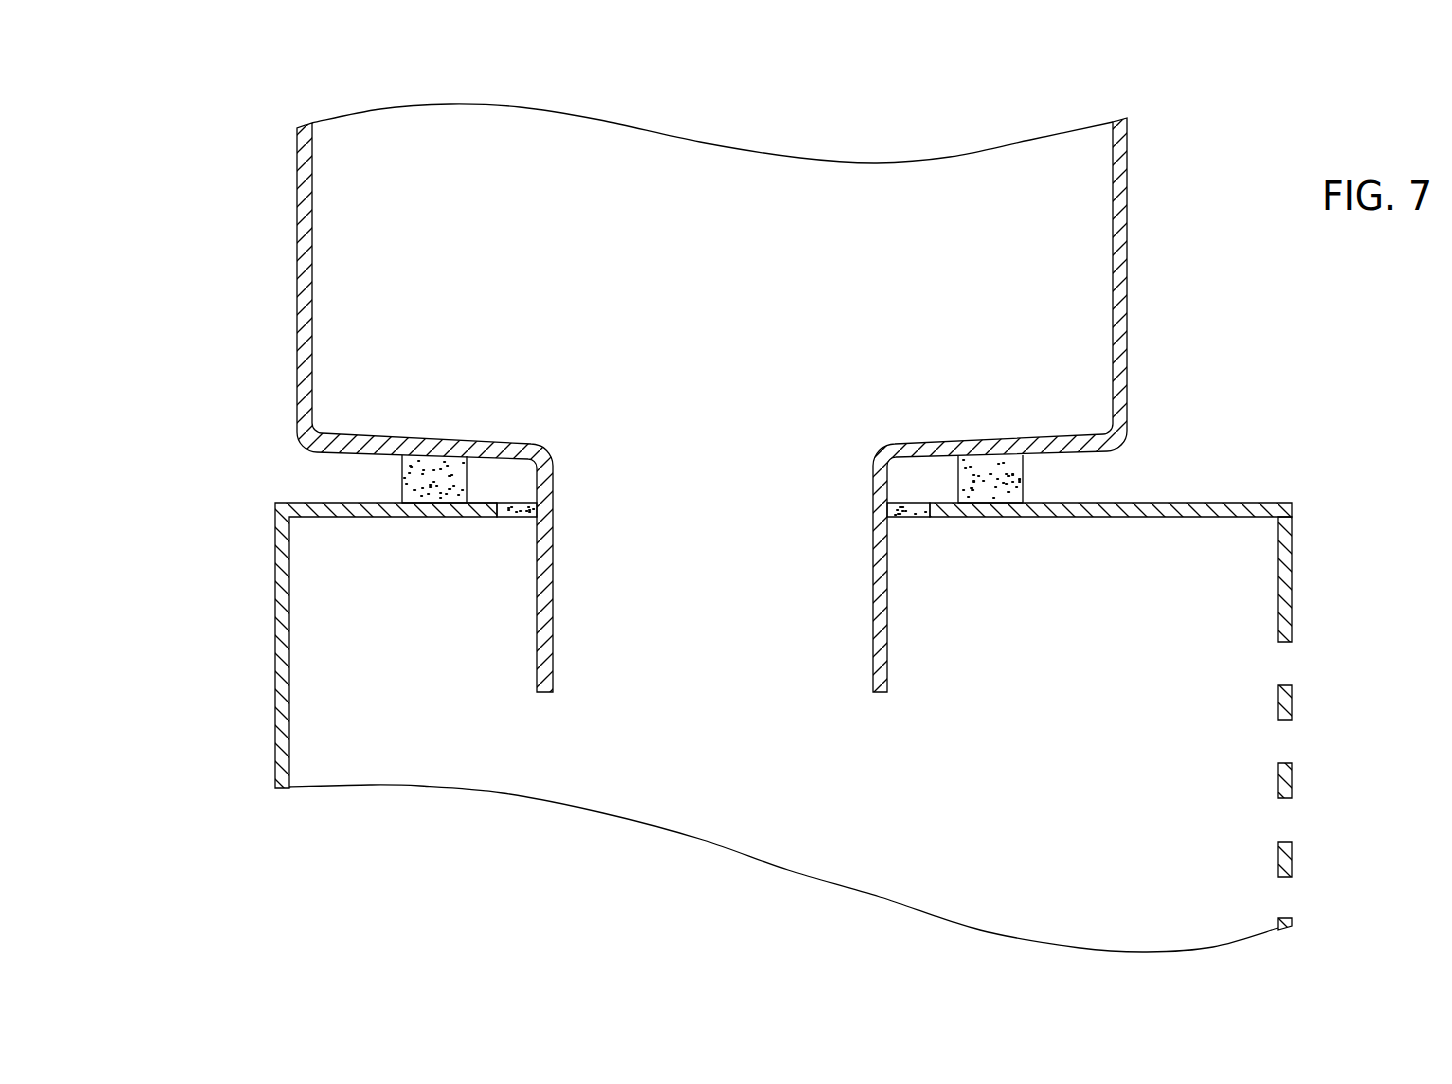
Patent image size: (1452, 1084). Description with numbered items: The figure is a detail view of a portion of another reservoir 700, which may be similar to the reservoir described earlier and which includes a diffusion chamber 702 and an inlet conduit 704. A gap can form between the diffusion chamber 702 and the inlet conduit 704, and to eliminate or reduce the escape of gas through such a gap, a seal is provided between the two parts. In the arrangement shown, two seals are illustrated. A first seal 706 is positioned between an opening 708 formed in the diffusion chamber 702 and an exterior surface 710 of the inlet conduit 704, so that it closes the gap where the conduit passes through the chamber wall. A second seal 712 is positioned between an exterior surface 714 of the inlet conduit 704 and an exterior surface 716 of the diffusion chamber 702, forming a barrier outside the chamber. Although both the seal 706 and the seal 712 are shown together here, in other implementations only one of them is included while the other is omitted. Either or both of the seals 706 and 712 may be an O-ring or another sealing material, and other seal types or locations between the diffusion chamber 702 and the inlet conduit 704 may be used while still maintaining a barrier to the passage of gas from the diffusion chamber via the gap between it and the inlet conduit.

The reservoir 700 is at (276, 67).
The diffusion chamber 702 is at (275, 572).
The inlet conduit 704 is at (1128, 283).
The seal 706 is at (522, 517).
The opening 708 is at (493, 508).
The exterior surface of the inlet conduit 710 is at (888, 632).
The seal 712 is at (404, 484).
The exterior surface of the inlet conduit 714 is at (1078, 451).
The exterior surface of the diffusion chamber 716 is at (1215, 503).